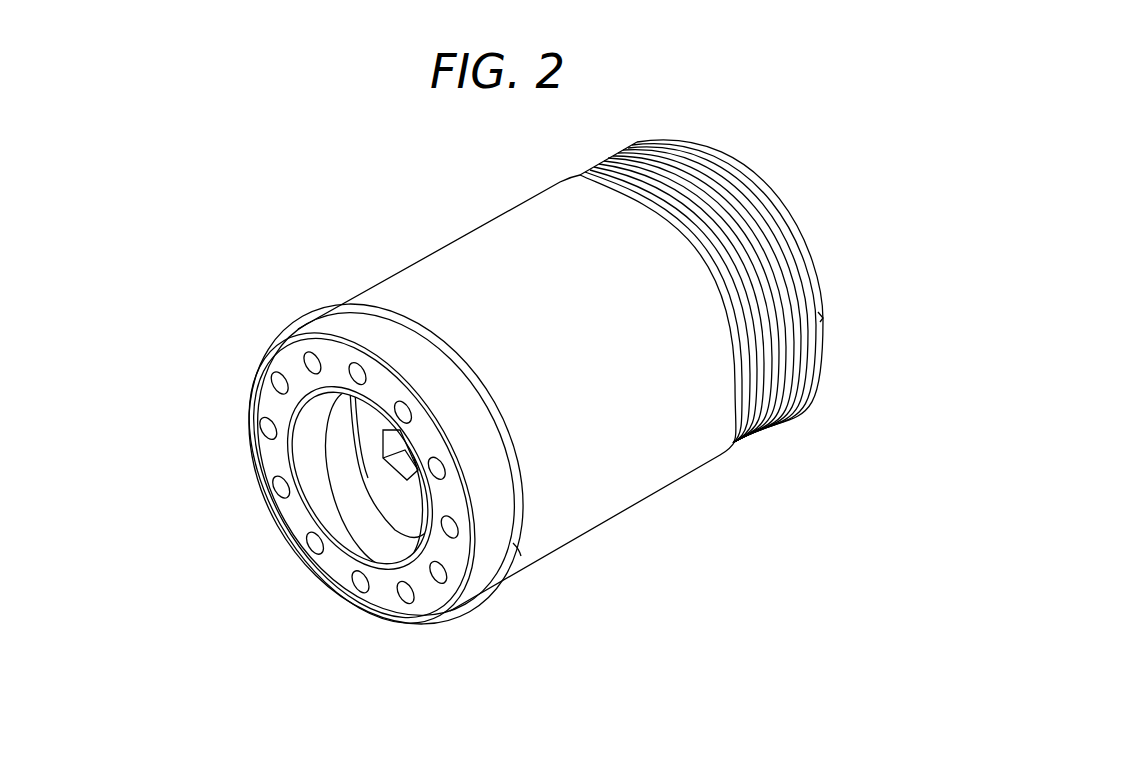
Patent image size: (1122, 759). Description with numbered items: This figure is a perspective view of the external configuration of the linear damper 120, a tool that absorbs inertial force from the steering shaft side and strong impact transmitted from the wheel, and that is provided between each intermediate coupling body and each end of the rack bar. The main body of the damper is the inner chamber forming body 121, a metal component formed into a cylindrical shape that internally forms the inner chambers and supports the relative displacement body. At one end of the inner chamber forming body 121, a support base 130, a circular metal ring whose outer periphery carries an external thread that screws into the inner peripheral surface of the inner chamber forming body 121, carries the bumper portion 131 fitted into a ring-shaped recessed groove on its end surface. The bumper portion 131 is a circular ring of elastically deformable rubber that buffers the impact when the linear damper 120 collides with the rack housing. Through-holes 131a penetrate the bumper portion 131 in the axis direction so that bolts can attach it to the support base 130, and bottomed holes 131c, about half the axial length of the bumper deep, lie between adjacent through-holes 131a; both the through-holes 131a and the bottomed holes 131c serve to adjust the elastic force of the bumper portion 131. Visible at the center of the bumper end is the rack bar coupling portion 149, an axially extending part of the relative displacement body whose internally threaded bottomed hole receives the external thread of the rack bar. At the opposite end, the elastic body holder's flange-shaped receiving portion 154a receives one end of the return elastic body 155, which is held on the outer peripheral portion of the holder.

The linear damper 120 is at (316, 151).
The inner chamber forming body 121 is at (487, 237).
The support base 130 is at (523, 543).
The bumper portion 131 is at (337, 322).
The through-holes 131a is at (268, 432).
The bottomed hole 131c is at (360, 590).
The rack bar coupling portion 149 is at (388, 466).
The receiving portion 154a is at (697, 145).
The return elastic body 155 is at (635, 150).